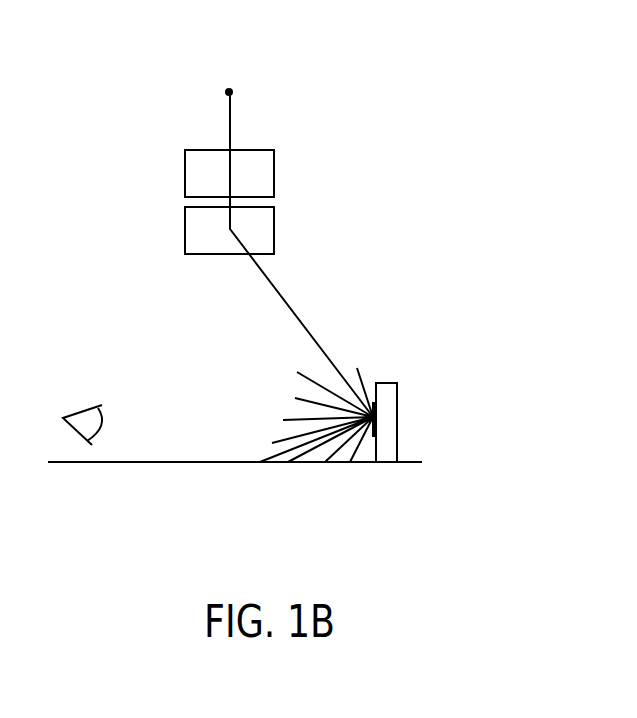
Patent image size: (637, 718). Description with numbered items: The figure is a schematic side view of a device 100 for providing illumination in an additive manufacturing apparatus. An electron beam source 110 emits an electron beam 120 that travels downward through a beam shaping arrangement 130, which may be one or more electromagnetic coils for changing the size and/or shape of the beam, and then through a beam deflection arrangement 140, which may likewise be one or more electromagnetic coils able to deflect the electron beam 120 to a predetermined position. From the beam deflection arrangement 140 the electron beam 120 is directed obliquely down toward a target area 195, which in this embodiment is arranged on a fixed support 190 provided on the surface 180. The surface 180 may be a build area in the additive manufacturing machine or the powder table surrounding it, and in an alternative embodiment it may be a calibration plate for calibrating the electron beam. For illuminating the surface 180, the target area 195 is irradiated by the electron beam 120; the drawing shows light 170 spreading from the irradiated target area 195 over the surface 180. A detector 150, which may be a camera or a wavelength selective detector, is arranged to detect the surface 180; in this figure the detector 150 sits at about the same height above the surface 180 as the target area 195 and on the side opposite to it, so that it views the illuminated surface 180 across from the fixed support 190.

The device 100 is at (434, 89).
The electron beam source 110 is at (233, 91).
The electron beam 120 is at (285, 113).
The beam shaping arrangement 130 is at (265, 176).
The beam deflection arrangement 140 is at (265, 228).
The detector 150 is at (77, 411).
The scattered light rays 170 is at (343, 472).
The surface 180 is at (158, 478).
The fixed support 190 is at (401, 360).
The target area 195 is at (392, 417).